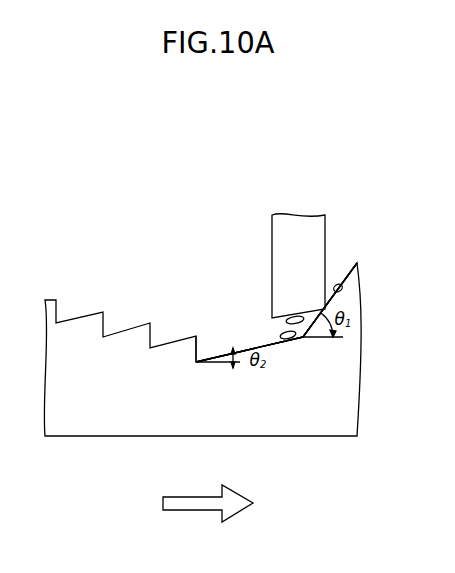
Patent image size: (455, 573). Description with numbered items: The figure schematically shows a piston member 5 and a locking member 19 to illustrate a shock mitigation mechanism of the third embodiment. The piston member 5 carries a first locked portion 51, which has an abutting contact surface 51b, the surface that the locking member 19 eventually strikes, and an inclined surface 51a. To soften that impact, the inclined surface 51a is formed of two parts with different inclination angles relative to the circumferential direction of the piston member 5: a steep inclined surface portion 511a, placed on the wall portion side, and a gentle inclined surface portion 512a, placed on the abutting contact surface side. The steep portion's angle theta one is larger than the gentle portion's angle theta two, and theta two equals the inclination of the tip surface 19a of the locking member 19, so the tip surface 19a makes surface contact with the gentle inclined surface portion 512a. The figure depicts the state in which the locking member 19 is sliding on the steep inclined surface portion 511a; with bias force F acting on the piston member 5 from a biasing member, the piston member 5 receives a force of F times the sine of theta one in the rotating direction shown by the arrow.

The piston member 5 is at (146, 235).
The first locked portion 51 is at (233, 252).
The inclined surface 51a is at (422, 313).
The steep inclined surface portion 511a is at (341, 291).
The gentle inclined surface portion 512a is at (303, 337).
The abutting contact surface 51b is at (199, 347).
The locking member 19 is at (312, 232).
The tip surface 19a is at (308, 314).